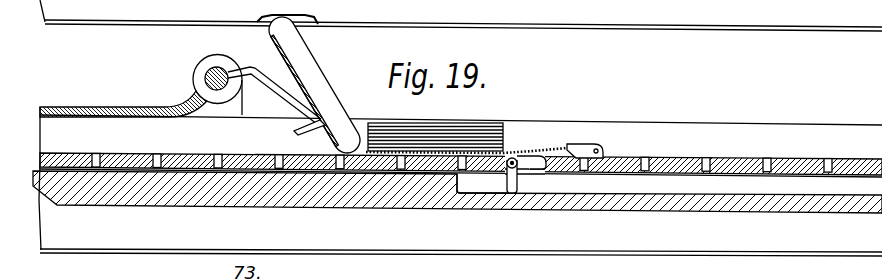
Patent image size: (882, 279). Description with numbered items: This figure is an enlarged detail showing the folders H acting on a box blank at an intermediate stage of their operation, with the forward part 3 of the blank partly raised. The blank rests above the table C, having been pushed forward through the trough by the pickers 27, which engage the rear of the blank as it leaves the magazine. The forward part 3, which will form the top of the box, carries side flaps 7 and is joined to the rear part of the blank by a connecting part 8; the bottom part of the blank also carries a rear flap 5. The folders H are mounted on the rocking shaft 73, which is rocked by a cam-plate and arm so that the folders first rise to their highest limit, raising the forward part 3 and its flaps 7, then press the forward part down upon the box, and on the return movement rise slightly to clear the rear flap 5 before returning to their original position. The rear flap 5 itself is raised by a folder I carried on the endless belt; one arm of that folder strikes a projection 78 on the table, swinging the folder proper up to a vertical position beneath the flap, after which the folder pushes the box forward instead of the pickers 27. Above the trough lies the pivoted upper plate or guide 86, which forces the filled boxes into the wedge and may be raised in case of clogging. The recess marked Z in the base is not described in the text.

The upper plate or guide 86 is at (79, 107).
The rocking shaft 73 is at (221, 71).
The side flaps 7 is at (305, 62).
The forward part of the blank 3 is at (318, 103).
The connecting part 8 is at (366, 151).
The rear flap 5 is at (516, 152).
The pickers 27 is at (584, 151).
The projection 78 is at (458, 186).
The folders H is at (272, 97).
The folders I is at (538, 156).
The recess Z is at (482, 183).
The table C is at (348, 198).